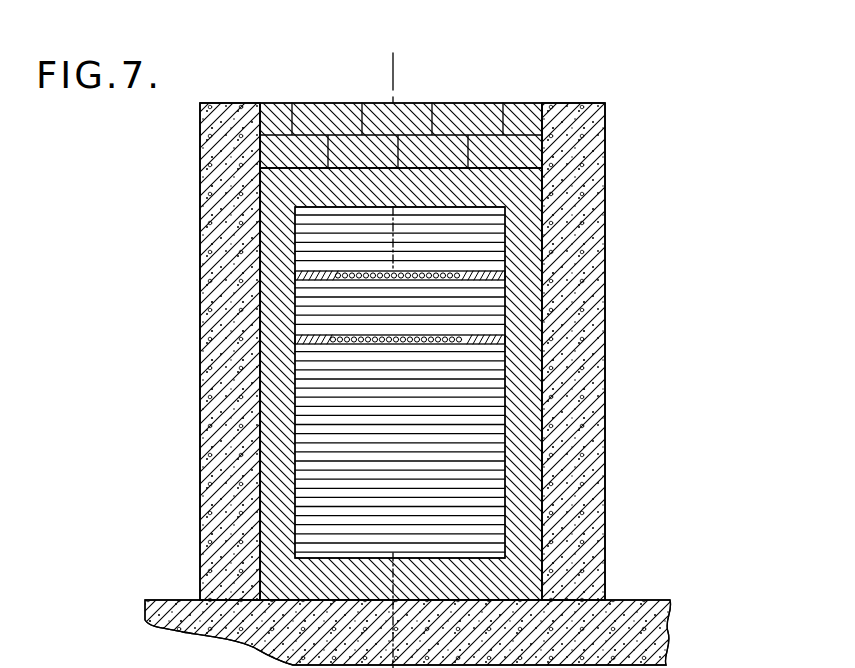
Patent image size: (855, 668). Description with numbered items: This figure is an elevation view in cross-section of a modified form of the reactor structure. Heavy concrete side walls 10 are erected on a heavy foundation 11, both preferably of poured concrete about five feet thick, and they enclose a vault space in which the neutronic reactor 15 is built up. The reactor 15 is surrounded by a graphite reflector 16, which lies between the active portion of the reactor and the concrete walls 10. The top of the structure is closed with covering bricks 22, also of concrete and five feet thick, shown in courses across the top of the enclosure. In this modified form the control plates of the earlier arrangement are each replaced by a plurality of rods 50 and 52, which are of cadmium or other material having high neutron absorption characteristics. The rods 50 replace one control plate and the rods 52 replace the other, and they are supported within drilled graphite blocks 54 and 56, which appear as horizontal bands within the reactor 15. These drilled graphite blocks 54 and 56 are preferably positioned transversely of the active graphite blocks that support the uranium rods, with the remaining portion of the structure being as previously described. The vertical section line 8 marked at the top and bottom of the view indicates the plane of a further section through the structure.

The section line 8- 8 is at (378, 68).
The side walls 10 is at (227, 405).
The foundation 11 is at (633, 608).
The neutronic reactor 15 is at (317, 462).
The graphite reflector 16 is at (280, 190).
The covering bricks 22 is at (478, 103).
The rods 50 is at (388, 344).
The rods 52 is at (393, 280).
The graphite block 54 is at (444, 337).
The graphite block 56 is at (344, 280).